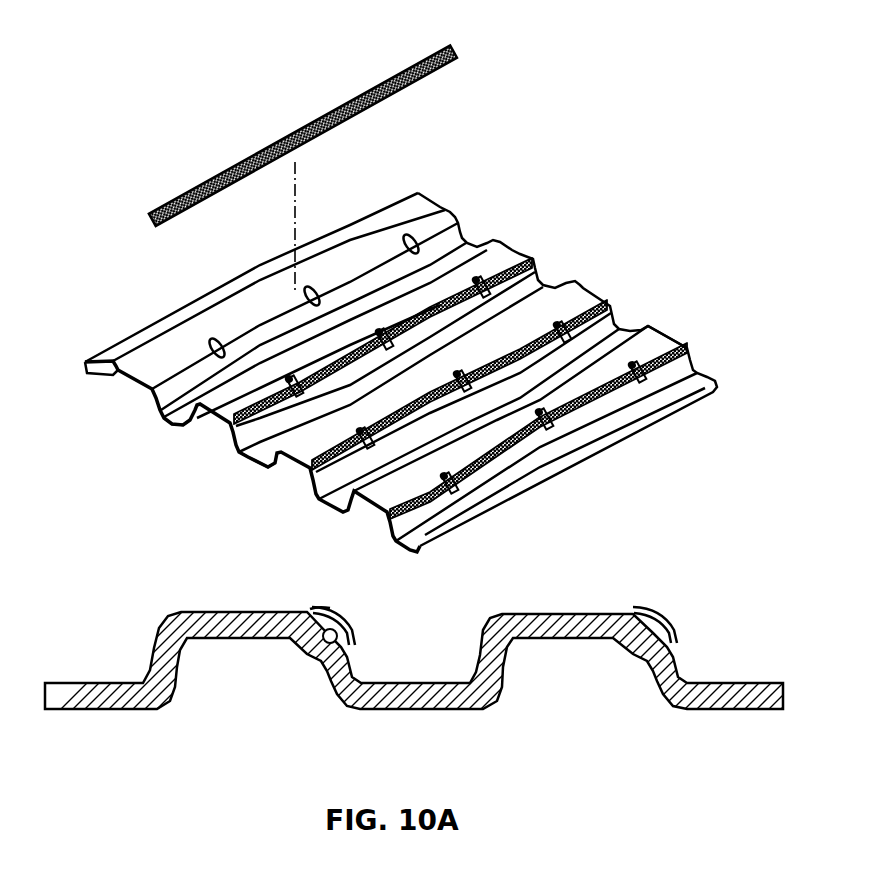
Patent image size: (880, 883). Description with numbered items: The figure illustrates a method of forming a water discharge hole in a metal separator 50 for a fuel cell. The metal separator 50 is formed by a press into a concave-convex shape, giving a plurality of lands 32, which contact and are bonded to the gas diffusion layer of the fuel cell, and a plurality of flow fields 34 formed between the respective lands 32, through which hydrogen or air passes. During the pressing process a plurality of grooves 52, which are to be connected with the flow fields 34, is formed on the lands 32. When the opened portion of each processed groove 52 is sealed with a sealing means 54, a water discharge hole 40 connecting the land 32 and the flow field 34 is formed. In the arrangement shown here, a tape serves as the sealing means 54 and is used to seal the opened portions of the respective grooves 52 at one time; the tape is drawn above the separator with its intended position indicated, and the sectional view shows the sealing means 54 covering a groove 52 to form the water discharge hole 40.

The metal separator 50 is at (515, 240).
The grooves 52 is at (413, 236).
The sealing means 54 is at (254, 160).
The water discharge hole 40 is at (312, 608).
The lands 32 is at (657, 342).
The flow fields 34 is at (235, 457).